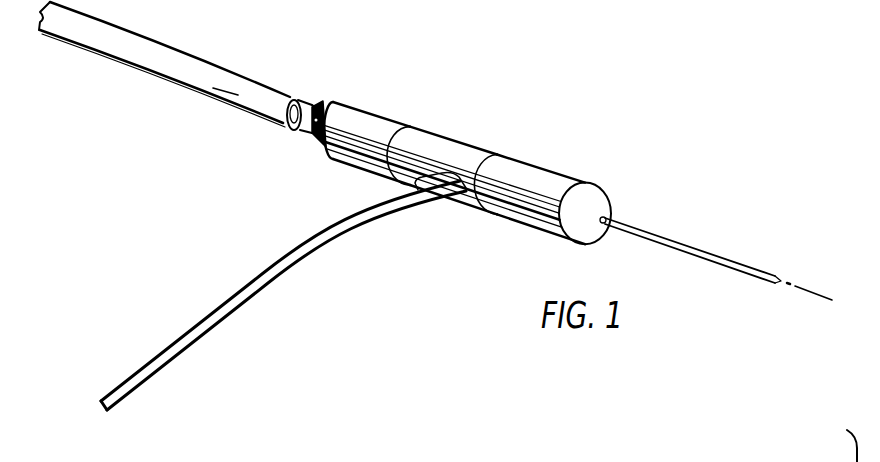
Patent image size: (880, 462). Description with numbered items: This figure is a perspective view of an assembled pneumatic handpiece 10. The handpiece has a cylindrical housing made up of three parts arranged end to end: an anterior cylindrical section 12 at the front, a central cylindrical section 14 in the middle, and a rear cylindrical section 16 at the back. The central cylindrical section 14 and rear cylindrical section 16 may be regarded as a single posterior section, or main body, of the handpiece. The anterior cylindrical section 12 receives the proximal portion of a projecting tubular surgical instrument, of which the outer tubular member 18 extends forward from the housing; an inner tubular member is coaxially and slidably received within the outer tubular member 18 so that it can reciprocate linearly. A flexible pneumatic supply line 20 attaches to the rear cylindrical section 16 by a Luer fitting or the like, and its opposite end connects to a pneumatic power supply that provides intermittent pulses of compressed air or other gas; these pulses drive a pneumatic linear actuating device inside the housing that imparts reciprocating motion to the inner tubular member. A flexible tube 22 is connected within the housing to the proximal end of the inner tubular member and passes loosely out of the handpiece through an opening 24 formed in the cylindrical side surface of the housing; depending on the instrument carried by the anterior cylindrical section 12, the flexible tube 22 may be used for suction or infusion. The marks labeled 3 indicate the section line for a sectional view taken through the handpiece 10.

The pneumatic handpiece 10 is at (480, 228).
The anterior cylindrical section 12 is at (564, 200).
The central cylindrical section 14 is at (469, 145).
The rear cylindrical section 16 is at (384, 118).
The outer tubular member 18 is at (683, 244).
The flexible pneumatic supply line 20 is at (123, 69).
The flexible tube 22 is at (292, 254).
The opening 24 is at (397, 182).
The section line 3- 3 is at (226, 84).